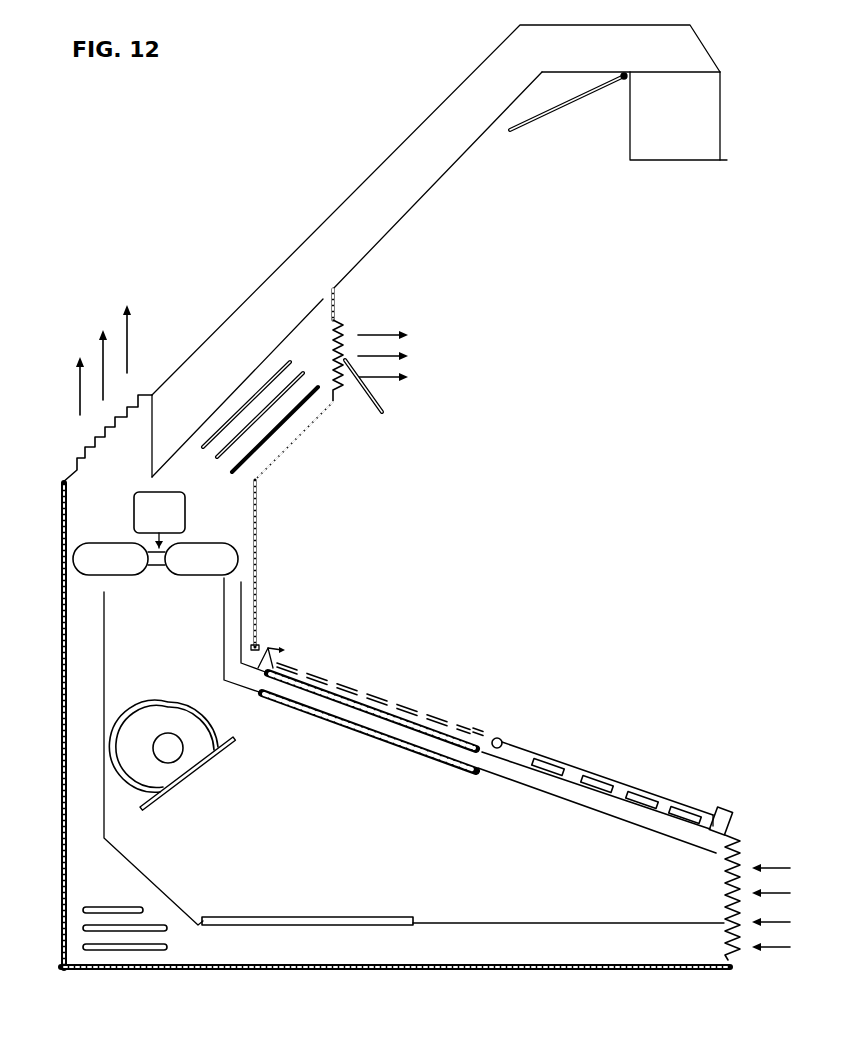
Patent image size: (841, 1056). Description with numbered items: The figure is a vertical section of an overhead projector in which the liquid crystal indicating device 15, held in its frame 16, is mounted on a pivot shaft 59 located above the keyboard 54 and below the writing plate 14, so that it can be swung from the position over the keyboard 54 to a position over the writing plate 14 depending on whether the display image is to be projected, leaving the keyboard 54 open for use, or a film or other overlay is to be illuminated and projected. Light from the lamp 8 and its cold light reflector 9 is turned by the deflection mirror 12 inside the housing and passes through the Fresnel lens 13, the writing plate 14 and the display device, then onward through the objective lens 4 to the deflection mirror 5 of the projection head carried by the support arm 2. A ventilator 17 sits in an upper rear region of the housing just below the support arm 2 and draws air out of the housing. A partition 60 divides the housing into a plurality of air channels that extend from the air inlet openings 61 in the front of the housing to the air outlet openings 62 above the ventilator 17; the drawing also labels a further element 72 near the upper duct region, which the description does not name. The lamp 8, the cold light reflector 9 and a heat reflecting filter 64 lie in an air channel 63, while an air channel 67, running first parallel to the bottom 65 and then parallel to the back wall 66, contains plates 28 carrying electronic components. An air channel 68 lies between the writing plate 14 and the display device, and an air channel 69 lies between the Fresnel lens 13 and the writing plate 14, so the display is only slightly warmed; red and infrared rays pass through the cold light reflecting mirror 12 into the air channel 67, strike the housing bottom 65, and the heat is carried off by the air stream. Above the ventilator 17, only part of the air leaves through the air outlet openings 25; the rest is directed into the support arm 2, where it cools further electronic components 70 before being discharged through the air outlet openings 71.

The support arm 2 is at (448, 152).
The objective lens 4 is at (656, 145).
The deflection mirror 5 is at (548, 115).
The lamp 8 is at (165, 742).
The cold light reflector 9 is at (123, 758).
The deflection mirror 12 is at (290, 921).
The Fresnel lens 13 is at (302, 712).
The writing plate 14 is at (335, 699).
The liquid crystal indicating device 15 is at (380, 695).
The frame 16 is at (722, 808).
The ventilator 17 is at (108, 560).
The air outlet openings 25 is at (110, 423).
The plates 28 is at (110, 913).
The keyboard 54 is at (625, 795).
The pivot shaft 59 is at (495, 739).
The partition 60 is at (100, 627).
The air inlet openings 61 is at (727, 888).
The air outlet openings 62 is at (170, 597).
The air channel 63 is at (627, 888).
The heat reflecting filter 64 is at (140, 803).
The bottom 65 is at (462, 966).
The back wall 66 is at (62, 849).
The air channel 67 is at (387, 942).
The air channel 68 is at (408, 719).
The air channel 69 is at (440, 736).
The electronic components 70 is at (255, 402).
The air outlet openings 71 is at (373, 398).
The partition wall 72 is at (210, 485).